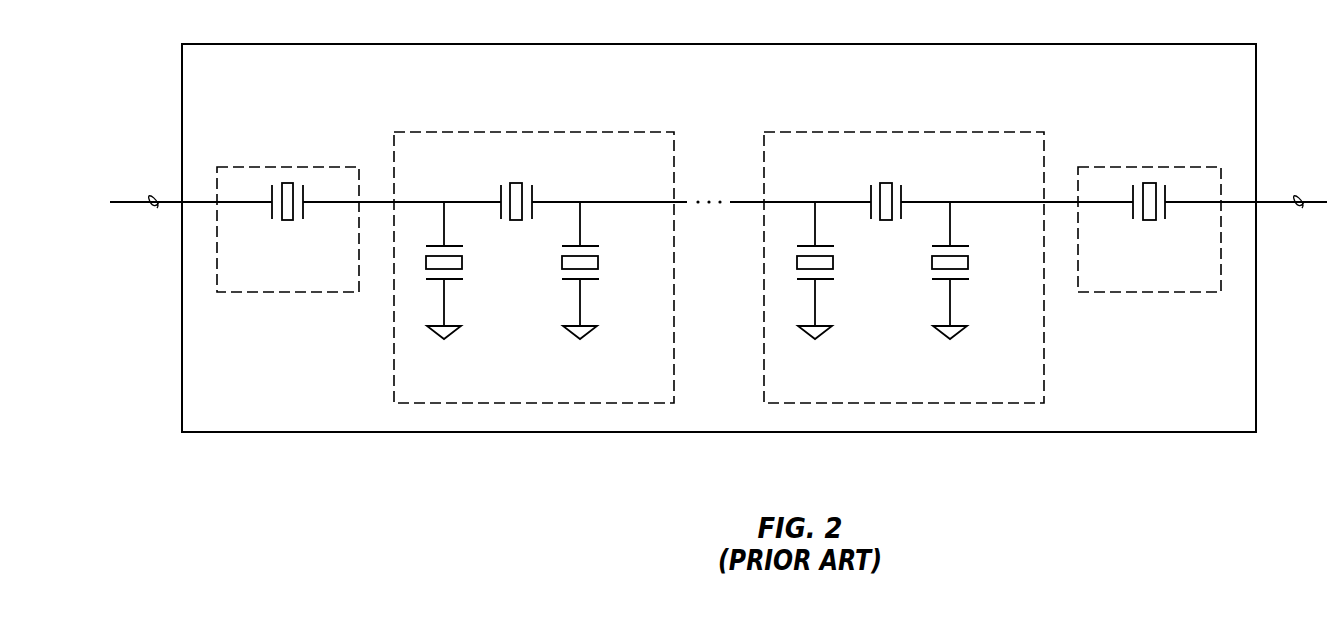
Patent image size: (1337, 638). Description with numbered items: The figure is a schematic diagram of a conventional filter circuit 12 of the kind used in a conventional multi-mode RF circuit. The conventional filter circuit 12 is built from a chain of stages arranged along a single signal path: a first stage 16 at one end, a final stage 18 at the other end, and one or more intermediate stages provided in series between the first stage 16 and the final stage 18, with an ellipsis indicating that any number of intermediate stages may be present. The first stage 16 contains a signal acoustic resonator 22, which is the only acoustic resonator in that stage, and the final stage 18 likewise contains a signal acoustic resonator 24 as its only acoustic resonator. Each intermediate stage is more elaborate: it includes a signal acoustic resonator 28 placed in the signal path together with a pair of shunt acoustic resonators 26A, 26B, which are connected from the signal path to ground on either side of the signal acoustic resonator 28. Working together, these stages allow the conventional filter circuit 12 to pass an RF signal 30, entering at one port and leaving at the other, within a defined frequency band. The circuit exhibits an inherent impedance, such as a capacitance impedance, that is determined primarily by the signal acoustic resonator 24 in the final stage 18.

The conventional filter circuit 12 is at (542, 83).
The first stage 16 is at (292, 292).
The final stage 18 is at (1155, 292).
The signal acoustic resonator 22 is at (287, 183).
The signal acoustic resonator 24 is at (1149, 183).
The shunt acoustic resonator 26A is at (462, 261).
The shunt acoustic resonator 26B is at (598, 261).
The signal acoustic resonator 28 is at (516, 183).
The RF signal 30 is at (157, 208).